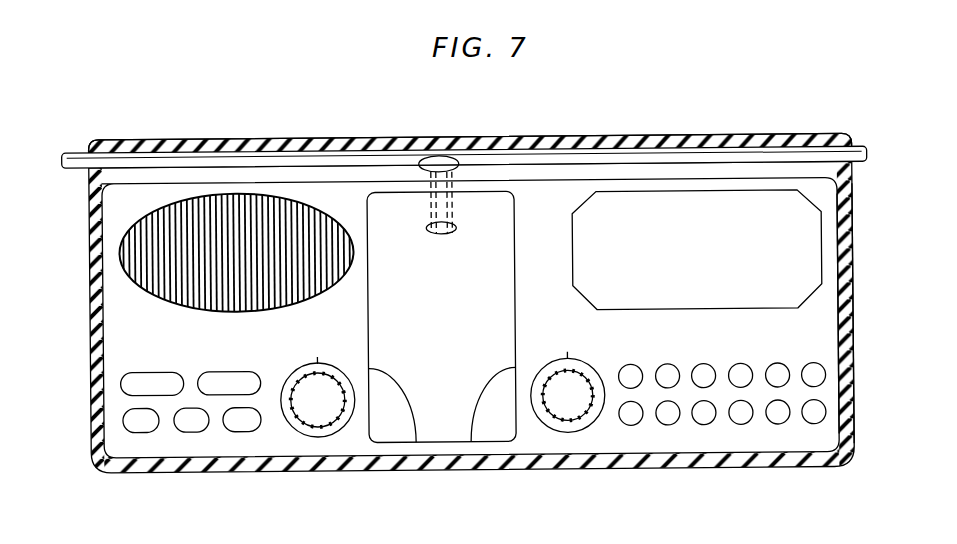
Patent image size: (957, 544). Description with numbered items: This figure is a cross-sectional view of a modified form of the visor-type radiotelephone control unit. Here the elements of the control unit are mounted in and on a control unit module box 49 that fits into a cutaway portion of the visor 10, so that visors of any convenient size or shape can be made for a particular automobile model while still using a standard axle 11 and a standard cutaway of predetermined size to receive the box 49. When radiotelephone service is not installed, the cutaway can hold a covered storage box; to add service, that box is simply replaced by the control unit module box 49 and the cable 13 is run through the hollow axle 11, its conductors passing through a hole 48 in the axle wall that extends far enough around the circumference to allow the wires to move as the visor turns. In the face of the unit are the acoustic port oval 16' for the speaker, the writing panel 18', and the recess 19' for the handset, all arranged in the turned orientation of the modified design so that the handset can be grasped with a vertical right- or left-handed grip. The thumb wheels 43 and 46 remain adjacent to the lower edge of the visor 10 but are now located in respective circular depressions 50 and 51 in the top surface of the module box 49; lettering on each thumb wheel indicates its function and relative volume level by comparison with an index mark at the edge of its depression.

The visor 10 is at (93, 325).
The axle 11 is at (77, 153).
The cable 13 is at (458, 229).
The acoustic port oval 16' is at (236, 273).
The writing panel 18' is at (697, 266).
The recess 19' is at (460, 317).
The thumb wheel 43 is at (322, 420).
The thumb wheel 46 is at (575, 414).
The hole 48 is at (457, 166).
The control unit module box 49 is at (820, 334).
The circular depression 50 is at (307, 434).
The circular depression 51 is at (558, 429).